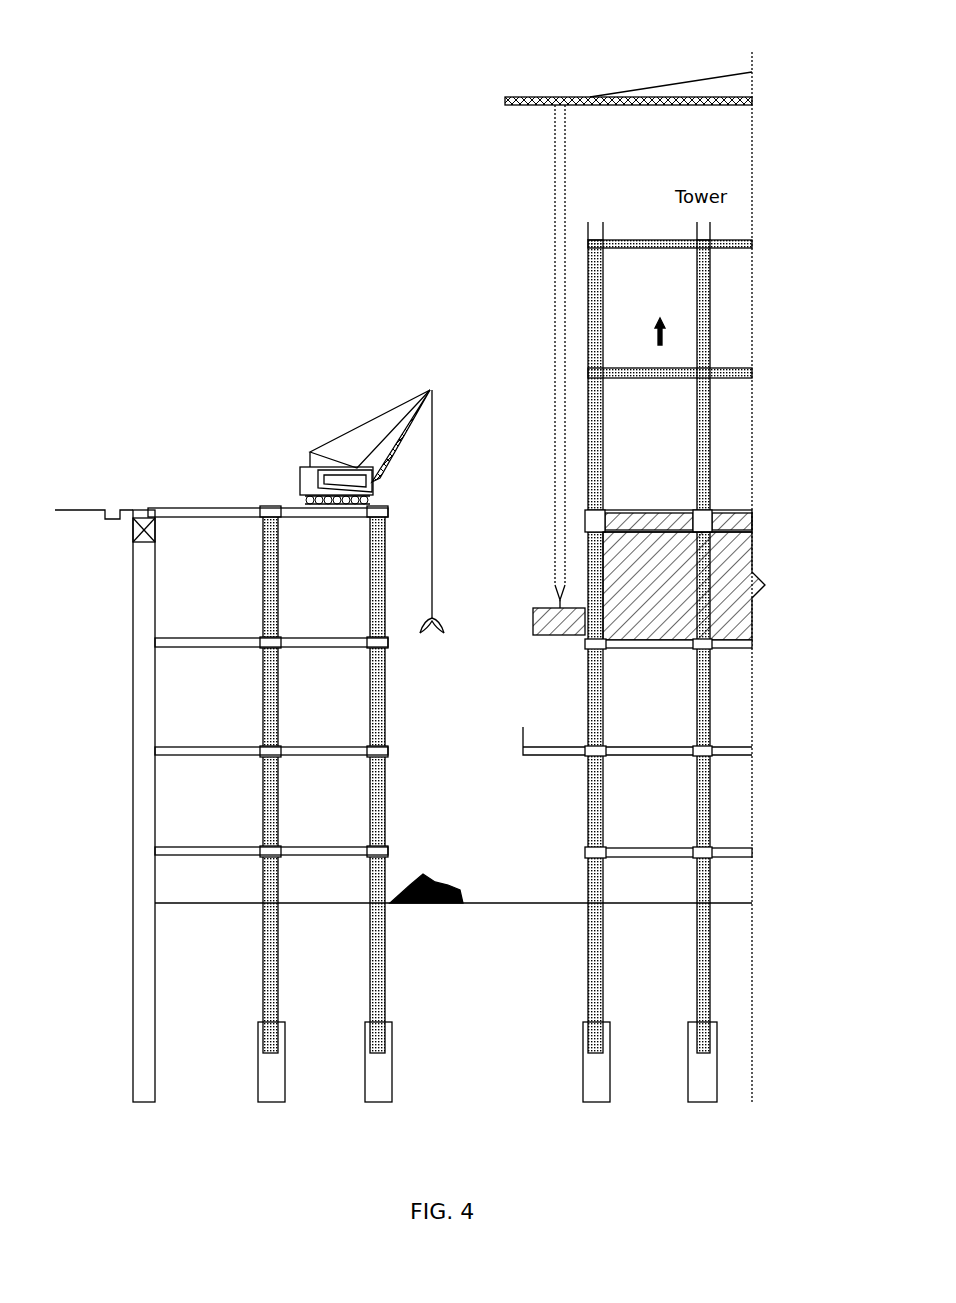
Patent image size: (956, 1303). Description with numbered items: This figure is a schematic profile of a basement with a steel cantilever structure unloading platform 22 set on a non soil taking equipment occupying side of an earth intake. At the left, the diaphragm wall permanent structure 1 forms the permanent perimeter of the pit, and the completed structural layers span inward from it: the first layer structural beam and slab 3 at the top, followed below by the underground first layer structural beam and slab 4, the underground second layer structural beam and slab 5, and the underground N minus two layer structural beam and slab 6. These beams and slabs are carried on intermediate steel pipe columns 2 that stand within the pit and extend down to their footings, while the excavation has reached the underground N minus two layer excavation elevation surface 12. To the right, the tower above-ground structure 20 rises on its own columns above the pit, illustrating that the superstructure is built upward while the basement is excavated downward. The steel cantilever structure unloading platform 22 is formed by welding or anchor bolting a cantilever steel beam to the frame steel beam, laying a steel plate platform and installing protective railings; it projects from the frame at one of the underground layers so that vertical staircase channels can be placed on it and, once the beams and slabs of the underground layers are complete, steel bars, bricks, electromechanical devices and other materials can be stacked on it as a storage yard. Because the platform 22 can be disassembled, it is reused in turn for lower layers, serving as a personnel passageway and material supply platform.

The diaphragm wall permanent structure 1 is at (110, 806).
The intermediate steel pipe column 2 is at (690, 538).
The first layer structural beam and slab 3 is at (249, 478).
The underground first layer structural beam and slab 4 is at (230, 588).
The underground second layer structural beam and slab 5 is at (230, 697).
The underground N−2 layer structural beam and slab 6 is at (229, 797).
The underground N−2th layer excavation elevation surface 12 is at (485, 831).
The tower above-ground structure 20 is at (704, 637).
The steel cantilever structure unloading platform 22 is at (637, 705).